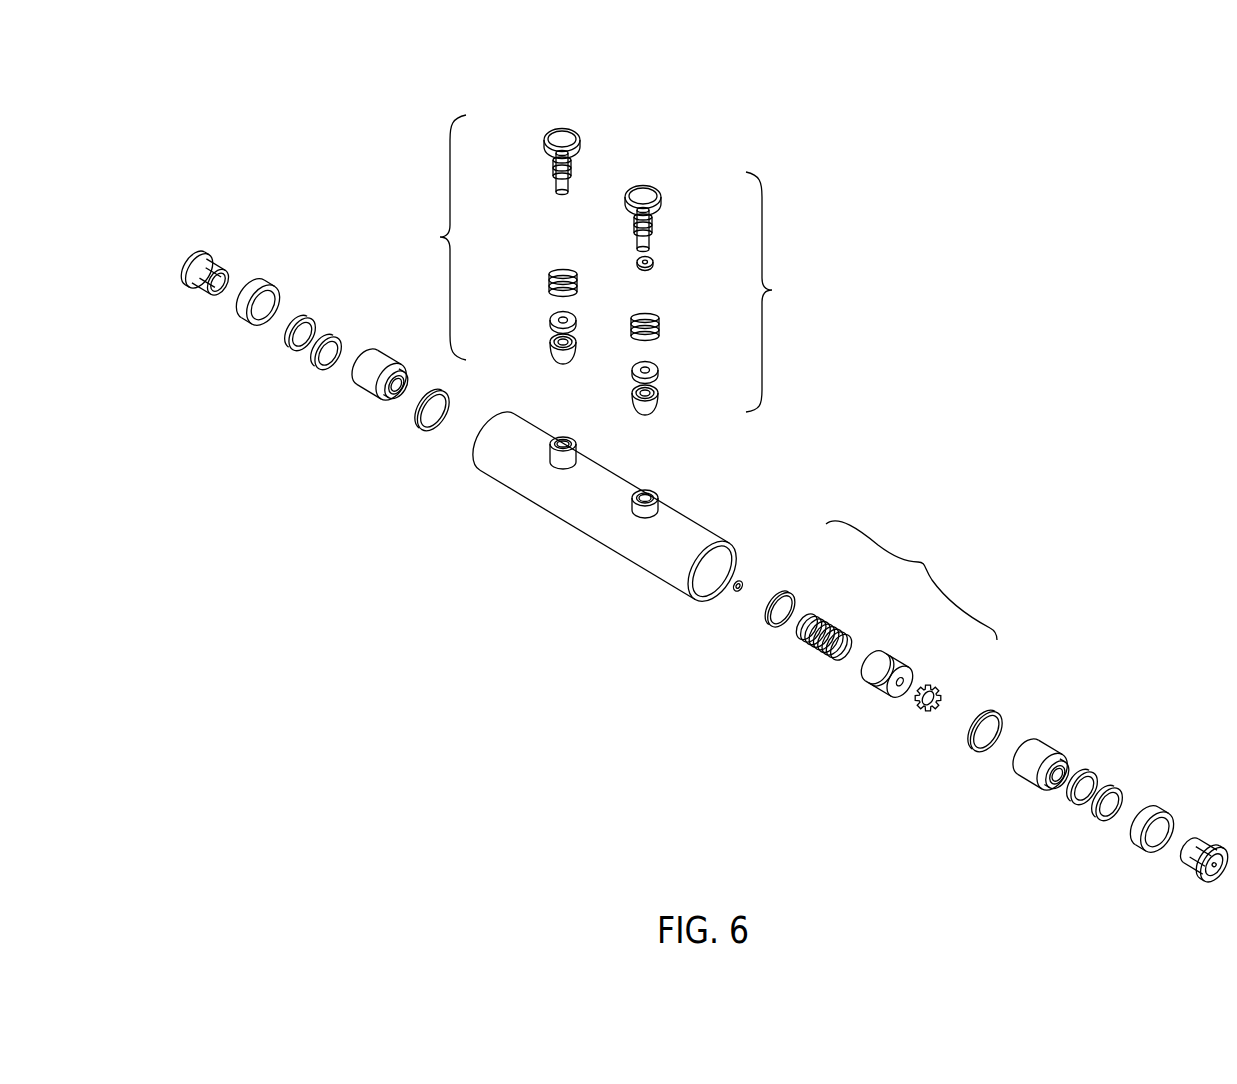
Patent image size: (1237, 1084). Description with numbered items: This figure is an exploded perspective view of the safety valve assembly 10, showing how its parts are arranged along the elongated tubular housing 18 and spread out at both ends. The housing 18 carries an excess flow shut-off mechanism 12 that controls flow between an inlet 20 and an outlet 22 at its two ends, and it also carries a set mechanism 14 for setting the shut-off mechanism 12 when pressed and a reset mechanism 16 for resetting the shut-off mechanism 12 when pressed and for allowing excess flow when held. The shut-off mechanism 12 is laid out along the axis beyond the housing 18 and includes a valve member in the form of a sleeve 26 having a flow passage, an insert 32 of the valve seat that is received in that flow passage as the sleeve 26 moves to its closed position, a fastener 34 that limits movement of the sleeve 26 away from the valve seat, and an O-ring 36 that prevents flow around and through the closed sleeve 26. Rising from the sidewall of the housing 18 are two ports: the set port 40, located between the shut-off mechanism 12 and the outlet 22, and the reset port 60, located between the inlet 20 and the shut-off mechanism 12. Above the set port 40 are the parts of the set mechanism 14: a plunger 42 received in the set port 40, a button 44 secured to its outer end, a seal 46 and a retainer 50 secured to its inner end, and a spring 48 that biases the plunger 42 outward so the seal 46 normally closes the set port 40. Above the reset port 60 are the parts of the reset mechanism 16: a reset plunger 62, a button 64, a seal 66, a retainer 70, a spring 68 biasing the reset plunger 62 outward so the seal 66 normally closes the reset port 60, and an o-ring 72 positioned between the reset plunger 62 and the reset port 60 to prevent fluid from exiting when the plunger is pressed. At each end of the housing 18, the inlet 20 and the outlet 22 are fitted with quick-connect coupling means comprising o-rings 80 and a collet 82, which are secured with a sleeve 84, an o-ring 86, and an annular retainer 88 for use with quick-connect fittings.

The safety valve assembly 10 is at (287, 113).
The excess flow shut-off mechanism 12 is at (911, 580).
The set mechanism 14 is at (437, 237).
The reset mechanism 16 is at (775, 292).
The housing 18 is at (597, 538).
The inlet 20 is at (735, 549).
The outlet 22 is at (480, 456).
The sleeve 26 is at (893, 661).
The insert 32 is at (748, 587).
The fastener 34 is at (945, 690).
The O-ring 36 is at (798, 599).
The set port 40 is at (586, 445).
The plunger 42 is at (575, 172).
The button 44 is at (585, 146).
The seal 46 is at (550, 320).
The spring 48 is at (547, 280).
The retainer 50 is at (551, 343).
The reset port 60 is at (664, 500).
The reset plunger 62 is at (656, 226).
The button 64 is at (667, 198).
The seal 66 is at (663, 372).
The spring 68 is at (662, 327).
The retainer 70 is at (664, 400).
The o-ring 72 is at (660, 262).
The o-rings 80 is at (1095, 817).
The collet 82 is at (230, 270).
The sleeve 84 is at (362, 390).
The o-ring 86 is at (420, 427).
The annular retainer 88 is at (280, 291).